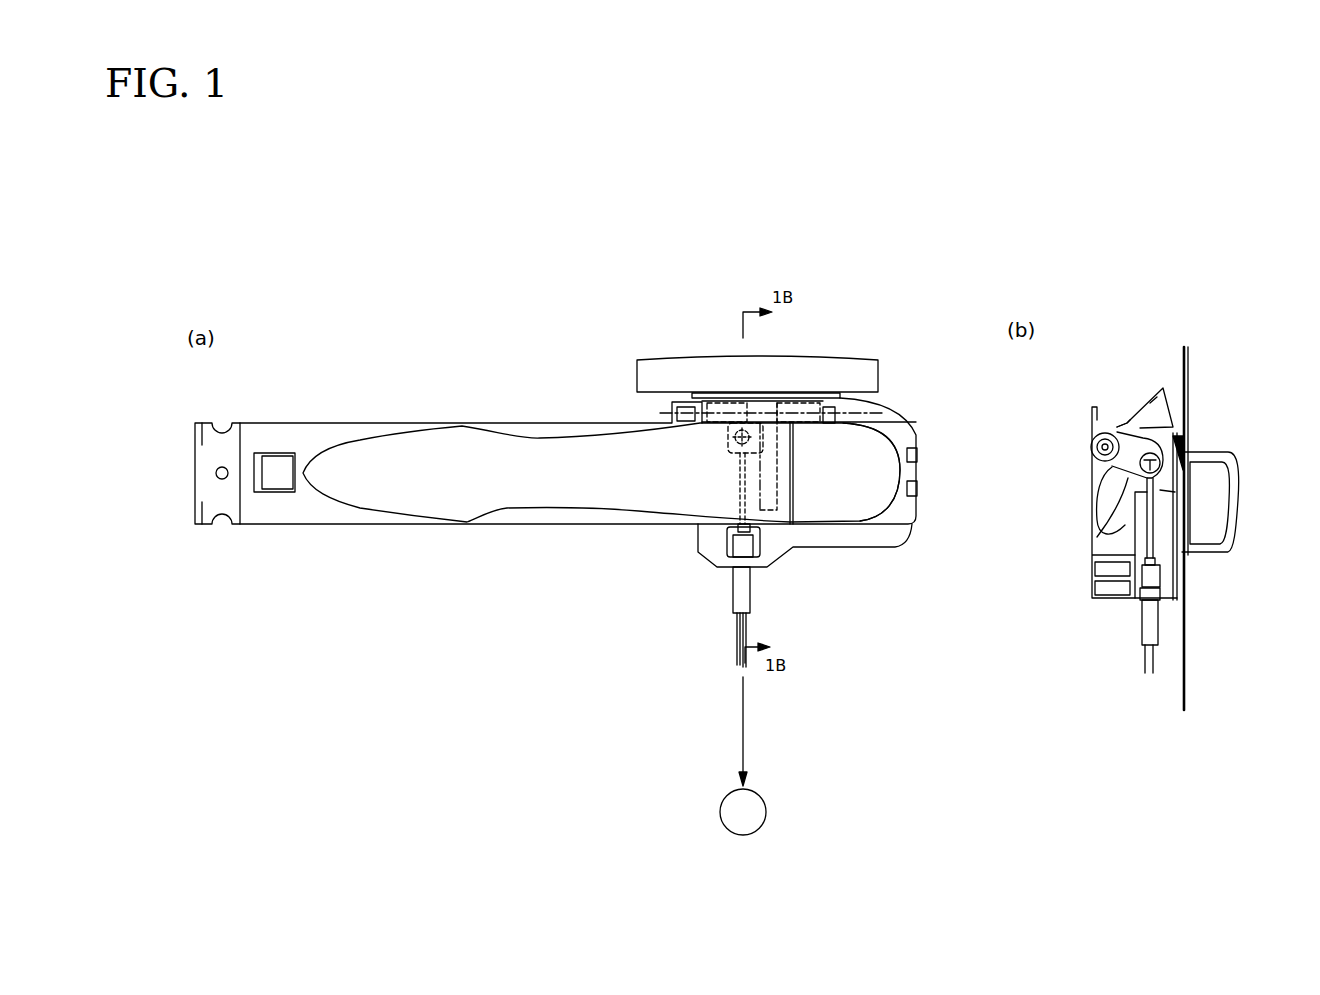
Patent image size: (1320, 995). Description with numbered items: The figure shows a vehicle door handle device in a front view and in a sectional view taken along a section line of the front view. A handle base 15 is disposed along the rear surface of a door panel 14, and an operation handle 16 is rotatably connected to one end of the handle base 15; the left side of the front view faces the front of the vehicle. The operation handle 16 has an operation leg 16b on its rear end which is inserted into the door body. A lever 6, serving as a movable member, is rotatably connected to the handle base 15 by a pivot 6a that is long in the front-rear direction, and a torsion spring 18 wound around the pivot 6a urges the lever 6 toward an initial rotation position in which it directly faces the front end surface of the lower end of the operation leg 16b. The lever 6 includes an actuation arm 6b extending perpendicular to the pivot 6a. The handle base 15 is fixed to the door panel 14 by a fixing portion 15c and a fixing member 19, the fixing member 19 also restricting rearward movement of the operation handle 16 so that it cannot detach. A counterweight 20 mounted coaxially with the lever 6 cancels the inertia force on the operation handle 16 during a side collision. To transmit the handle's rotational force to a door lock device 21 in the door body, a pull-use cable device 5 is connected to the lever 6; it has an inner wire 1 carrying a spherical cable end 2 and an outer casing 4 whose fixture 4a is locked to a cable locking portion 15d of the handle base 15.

The inner wire 1 is at (735, 478).
The cable end 2 is at (1160, 455).
The outer casing 4 is at (735, 660).
The fixture 4a is at (746, 590).
The cable device 5 is at (722, 635).
The lever 6 is at (792, 428).
The pivot 6a is at (870, 408).
The actuation arm 6b is at (790, 525).
The door panel 14 is at (1185, 670).
The handle base 15 is at (875, 533).
The fixing portion 15c is at (222, 500).
The cable locking portion 15d is at (727, 567).
The operation handle 16 is at (510, 488).
The operation leg 16b is at (1167, 492).
The torsion spring 18 is at (1091, 447).
The fixing member 19 is at (873, 500).
The counterweight 20 is at (663, 373).
The door lock device 21 is at (757, 812).